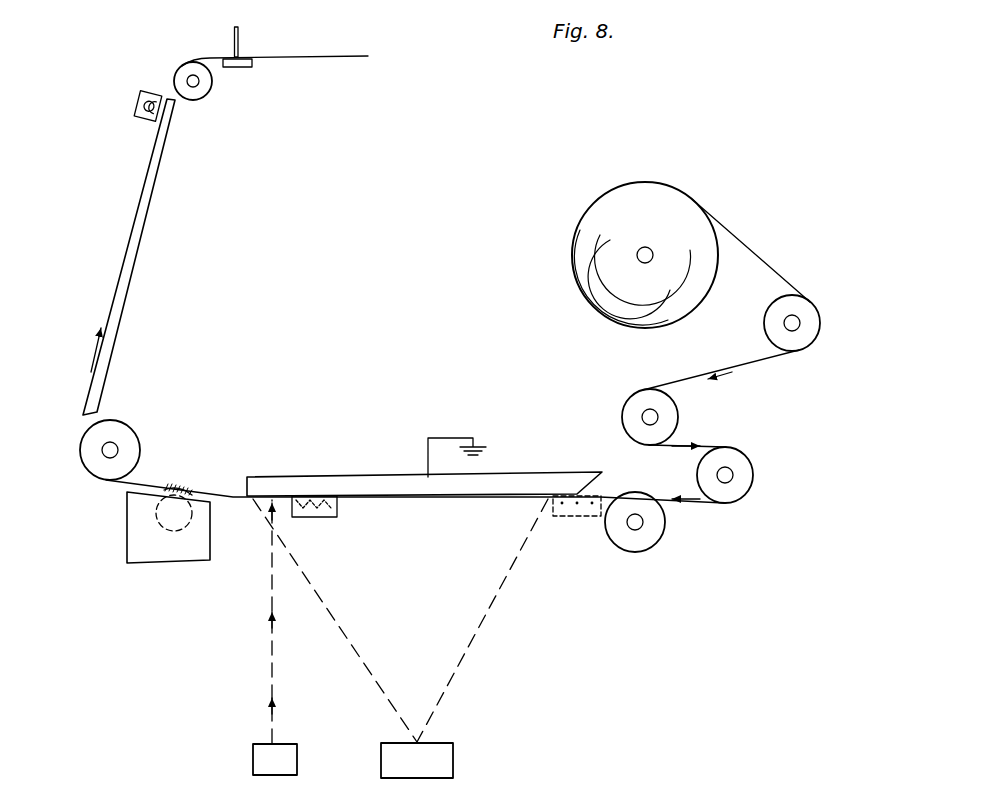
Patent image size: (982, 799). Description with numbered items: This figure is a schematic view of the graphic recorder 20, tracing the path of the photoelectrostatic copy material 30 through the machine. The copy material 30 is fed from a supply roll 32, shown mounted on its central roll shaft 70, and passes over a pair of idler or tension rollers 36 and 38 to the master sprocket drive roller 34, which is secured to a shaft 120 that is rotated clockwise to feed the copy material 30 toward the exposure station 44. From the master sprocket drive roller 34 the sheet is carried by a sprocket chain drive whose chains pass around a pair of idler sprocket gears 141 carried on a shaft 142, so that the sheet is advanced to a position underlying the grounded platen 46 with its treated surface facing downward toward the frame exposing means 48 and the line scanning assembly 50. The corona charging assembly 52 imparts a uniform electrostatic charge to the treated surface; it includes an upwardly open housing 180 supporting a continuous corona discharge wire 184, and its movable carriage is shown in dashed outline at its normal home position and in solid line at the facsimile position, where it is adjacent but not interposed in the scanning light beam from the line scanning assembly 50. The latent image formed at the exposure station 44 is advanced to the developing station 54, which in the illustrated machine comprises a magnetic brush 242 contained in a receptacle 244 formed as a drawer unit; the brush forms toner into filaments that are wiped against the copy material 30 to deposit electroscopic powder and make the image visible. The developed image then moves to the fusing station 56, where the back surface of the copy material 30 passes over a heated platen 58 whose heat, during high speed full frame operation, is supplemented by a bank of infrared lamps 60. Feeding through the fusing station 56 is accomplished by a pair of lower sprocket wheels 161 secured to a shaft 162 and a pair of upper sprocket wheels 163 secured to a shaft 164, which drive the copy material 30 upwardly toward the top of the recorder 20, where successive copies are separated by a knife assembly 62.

The graphic recorder 20 is at (639, 124).
The photoelectrostatic copy material 30 is at (329, 52).
The supply roll 32 is at (670, 205).
The roll shaft 70 is at (637, 258).
The idler or tension roller 36 is at (806, 340).
The idler or tension roller 38 is at (630, 405).
The master sprocket drive roller 34 is at (744, 462).
The shaft 120 is at (729, 479).
The idler sprocket gear 141 is at (660, 537).
The shaft 142 is at (635, 530).
The exposure station 44 is at (551, 588).
The grounded platen 46 is at (302, 478).
The frame exposing means 48 is at (453, 752).
The line scanning assembly 50 is at (253, 750).
The corona charging assembly 52 is at (334, 521).
The housing 180 is at (337, 515).
The corona discharge wire 184 is at (333, 500).
The developing station 54 is at (123, 569).
The receptacle 244 is at (130, 522).
The magnetic brush 242 is at (181, 490).
The fusing station 56 is at (94, 222).
The heated platen 58 is at (138, 224).
The infrared lamps 60 is at (143, 104).
The knife assembly 62 is at (226, 35).
The lower sprocket wheel 161 is at (100, 432).
The shaft 162 is at (116, 446).
The upper sprocket wheel 163 is at (200, 97).
The shaft 164 is at (190, 79).